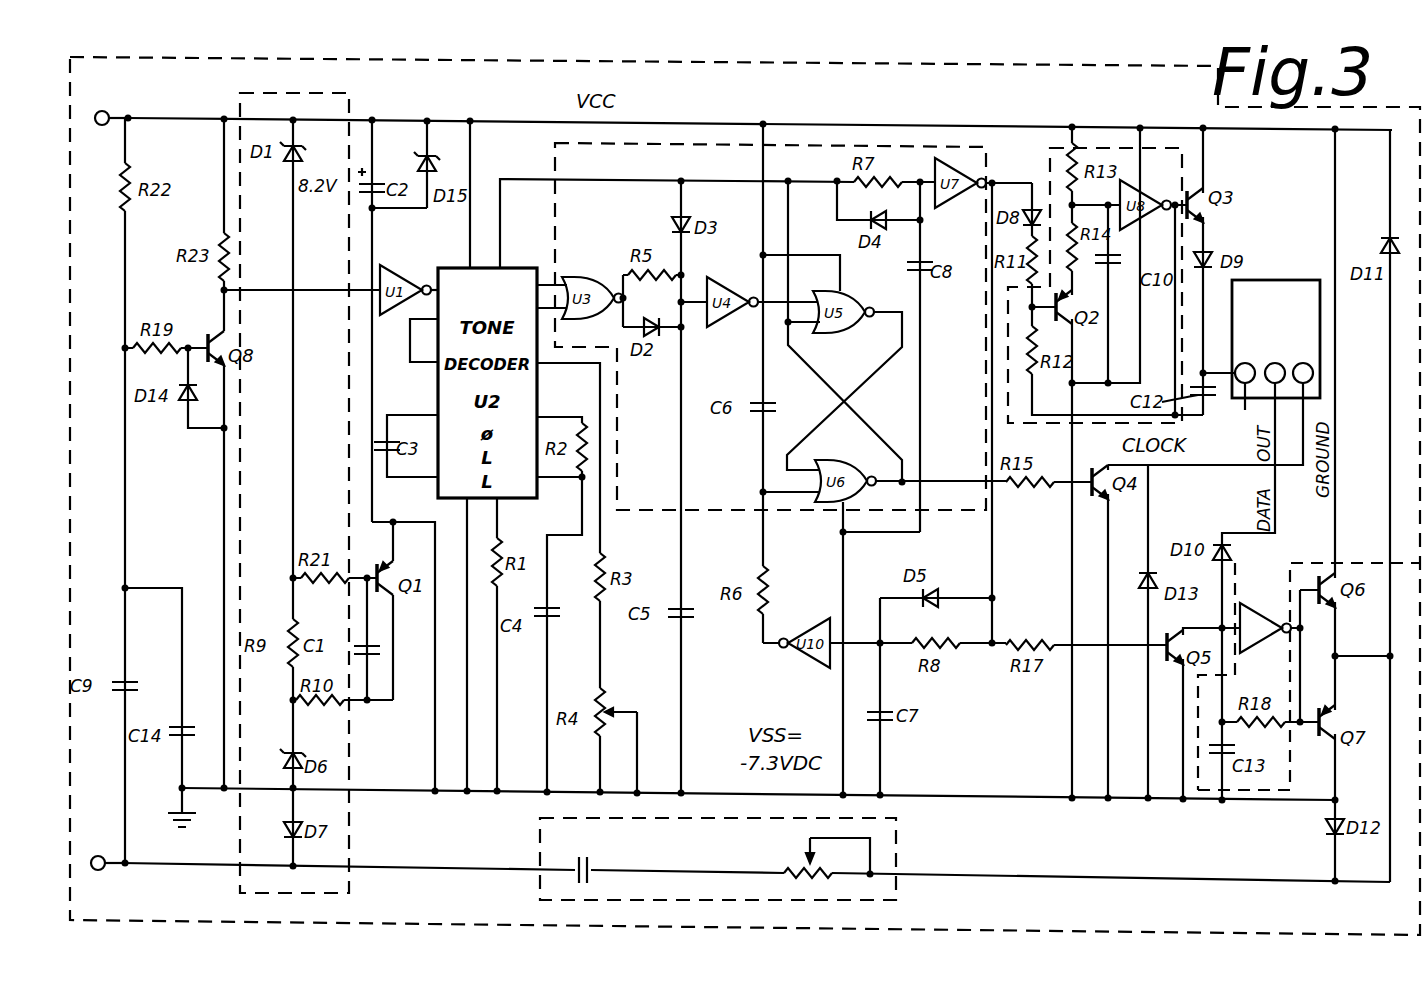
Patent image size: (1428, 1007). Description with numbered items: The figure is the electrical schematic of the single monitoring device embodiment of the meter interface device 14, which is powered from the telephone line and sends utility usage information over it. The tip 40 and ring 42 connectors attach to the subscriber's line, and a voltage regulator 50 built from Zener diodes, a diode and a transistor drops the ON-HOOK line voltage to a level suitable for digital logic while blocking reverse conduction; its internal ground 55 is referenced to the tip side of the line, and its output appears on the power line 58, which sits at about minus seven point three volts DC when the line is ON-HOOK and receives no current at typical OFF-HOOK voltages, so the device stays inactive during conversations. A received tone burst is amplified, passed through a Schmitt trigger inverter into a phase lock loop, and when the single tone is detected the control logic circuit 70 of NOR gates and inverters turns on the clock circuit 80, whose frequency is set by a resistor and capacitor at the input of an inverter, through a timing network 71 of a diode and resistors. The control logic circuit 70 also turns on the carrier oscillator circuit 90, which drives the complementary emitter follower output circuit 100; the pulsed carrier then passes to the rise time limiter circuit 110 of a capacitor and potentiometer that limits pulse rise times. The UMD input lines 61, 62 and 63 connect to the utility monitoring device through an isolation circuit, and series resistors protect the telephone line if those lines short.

The meter interface device 14 is at (883, 62).
The tip connector 40 is at (108, 112).
The ring connector 42 is at (100, 870).
The voltage regulator 50 is at (290, 93).
The internal ground 55 is at (184, 830).
The power line 58 is at (944, 799).
The UMD input line 61 is at (1298, 365).
The UMD input line 62 is at (1288, 352).
The UMD input line 63 is at (1313, 372).
The control logic circuit 70 is at (905, 144).
The timing network 71 is at (1013, 183).
The clock circuit 80 is at (1100, 148).
The carrier oscillator circuit 90 is at (1205, 496).
The output circuit 100 is at (1284, 836).
The rise time limiter circuit 110 is at (898, 834).